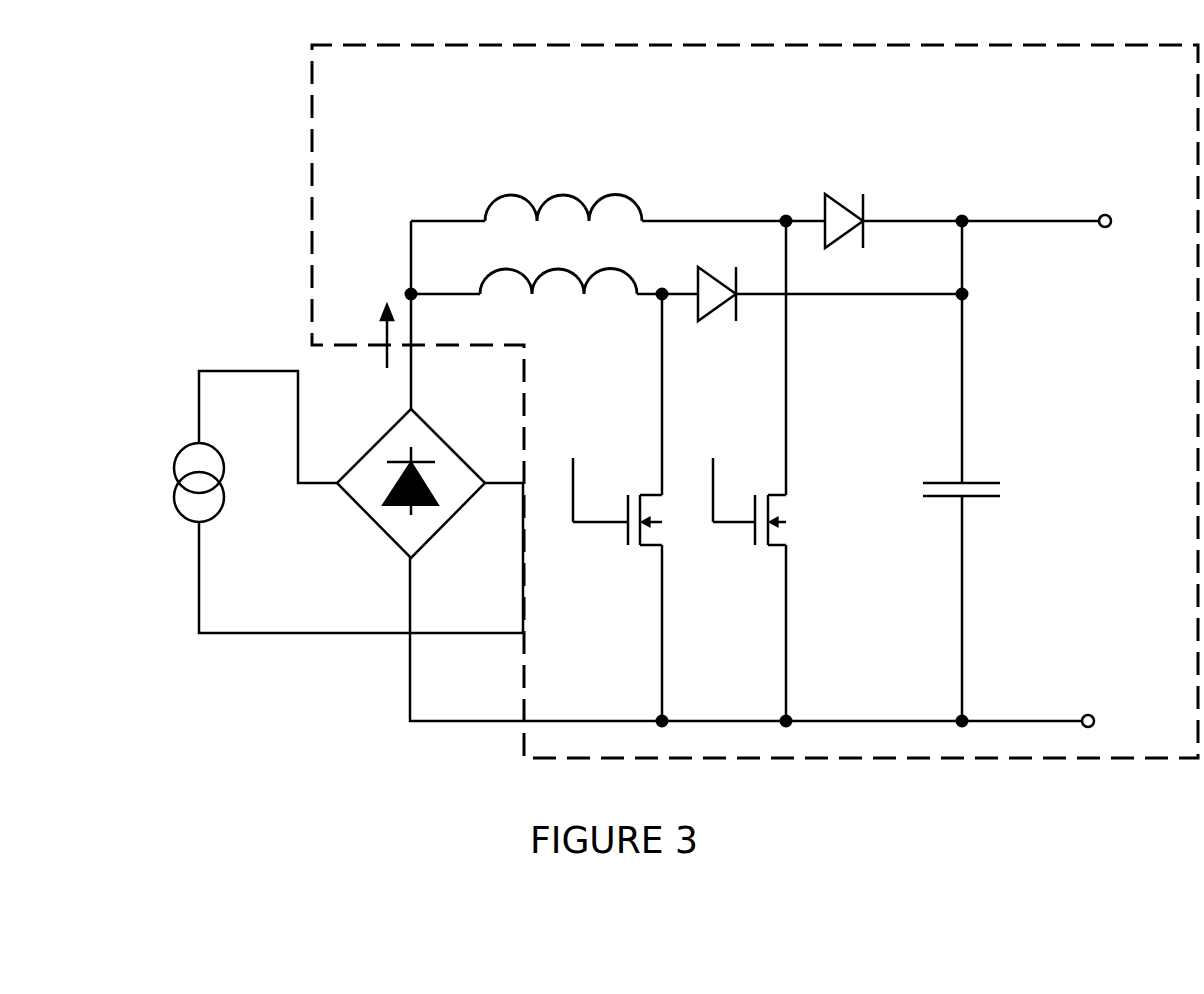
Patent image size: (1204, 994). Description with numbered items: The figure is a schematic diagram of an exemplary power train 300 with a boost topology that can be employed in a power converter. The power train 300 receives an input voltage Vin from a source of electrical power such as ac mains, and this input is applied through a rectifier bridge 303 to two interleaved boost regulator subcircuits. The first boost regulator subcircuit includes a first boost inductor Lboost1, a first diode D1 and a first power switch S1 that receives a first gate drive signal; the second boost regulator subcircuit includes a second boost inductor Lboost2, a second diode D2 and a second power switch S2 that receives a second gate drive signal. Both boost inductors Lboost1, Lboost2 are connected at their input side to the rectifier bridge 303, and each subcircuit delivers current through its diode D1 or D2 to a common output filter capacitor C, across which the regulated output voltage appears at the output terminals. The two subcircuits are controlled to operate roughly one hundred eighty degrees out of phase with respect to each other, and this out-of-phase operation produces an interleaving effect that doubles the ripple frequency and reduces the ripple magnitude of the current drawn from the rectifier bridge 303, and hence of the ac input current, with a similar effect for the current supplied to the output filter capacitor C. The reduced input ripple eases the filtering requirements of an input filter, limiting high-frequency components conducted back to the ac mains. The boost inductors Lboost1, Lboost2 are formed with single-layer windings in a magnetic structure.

The power train 300 is at (1102, 98).
The rectifier bridge 303 is at (411, 483).
The first boost inductor Lboost1 is at (558, 266).
The second boost inductor Lboost2 is at (563, 183).
The first diode D1 is at (712, 278).
The second diode D2 is at (844, 198).
The first power switch S1 is at (629, 491).
The second power switch S2 is at (765, 491).
The output filter capacitor C is at (977, 489).
The input voltage Vin is at (169, 482).